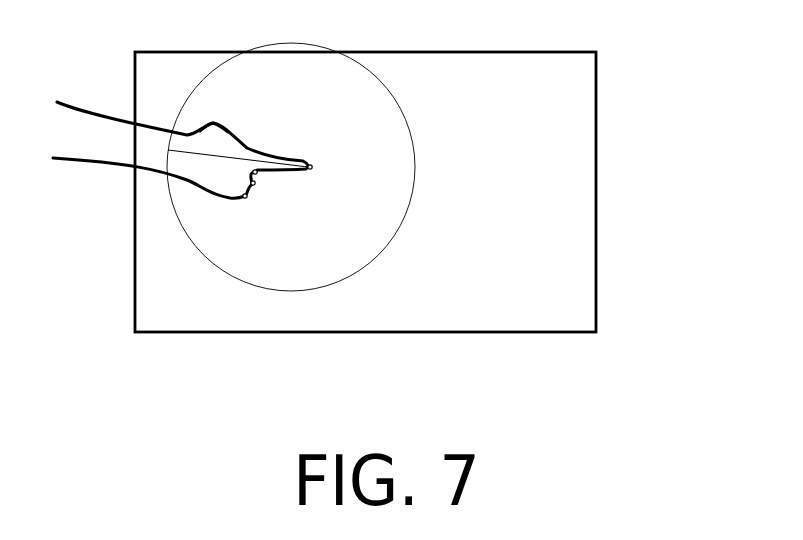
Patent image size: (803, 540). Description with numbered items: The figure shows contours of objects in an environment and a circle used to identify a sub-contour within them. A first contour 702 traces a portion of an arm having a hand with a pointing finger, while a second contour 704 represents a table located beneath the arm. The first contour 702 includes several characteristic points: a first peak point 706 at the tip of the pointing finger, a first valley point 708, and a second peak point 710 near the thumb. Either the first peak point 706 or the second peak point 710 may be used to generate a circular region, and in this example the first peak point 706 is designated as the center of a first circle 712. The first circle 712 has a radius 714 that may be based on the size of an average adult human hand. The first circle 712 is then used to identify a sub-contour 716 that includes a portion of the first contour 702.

The first contour 702 is at (75, 105).
The second contour 704 is at (595, 192).
The first peak point 706 is at (311, 165).
The first valley point 708 is at (257, 174).
The second peak point 710 is at (254, 185).
The first circle 712 is at (415, 155).
The radius 714 is at (208, 155).
The sub-contour 716 is at (218, 125).